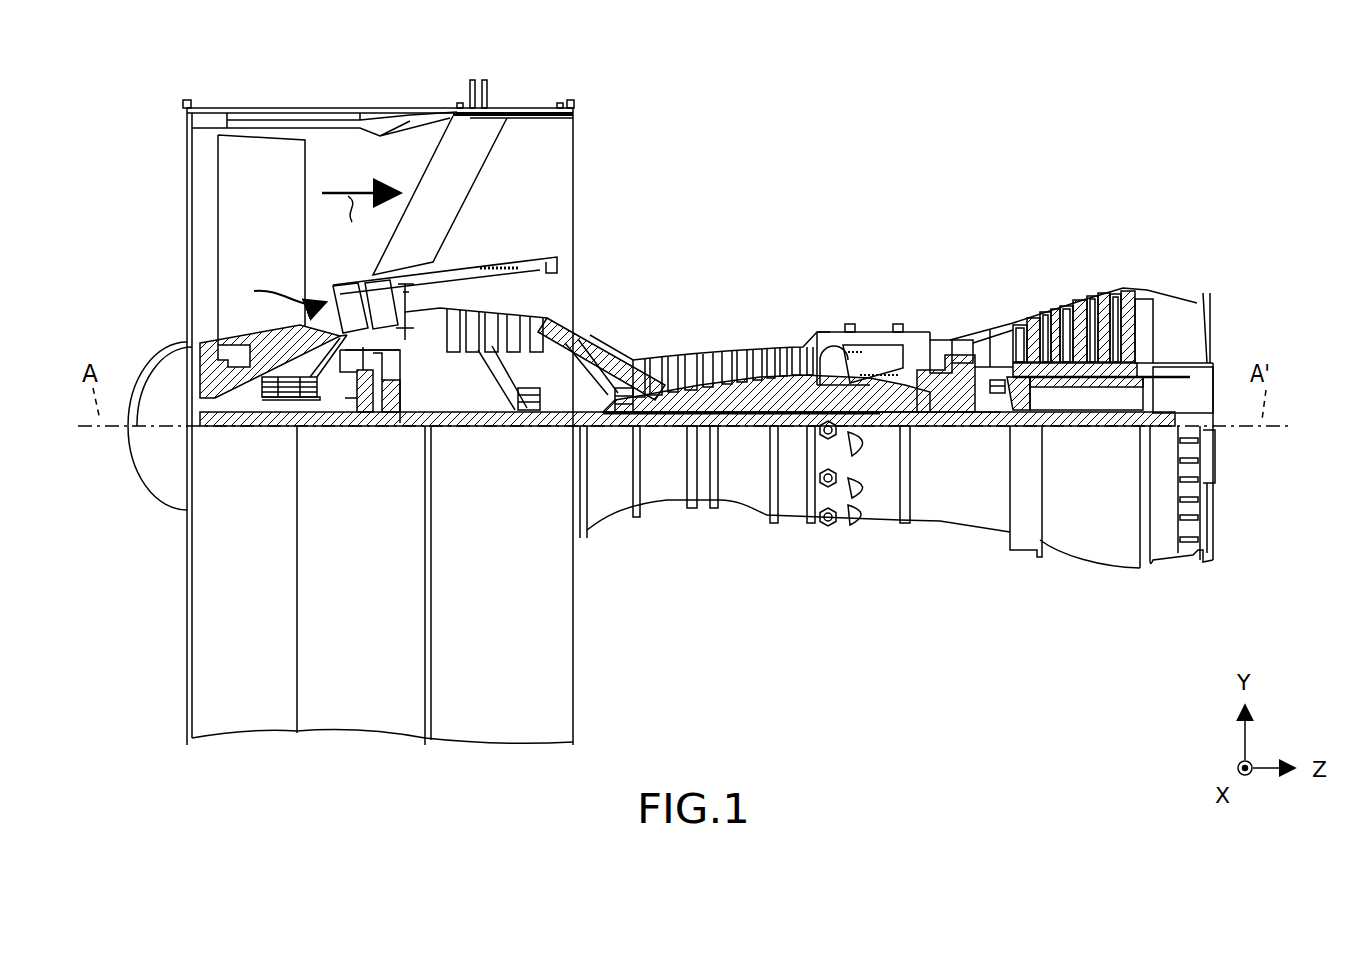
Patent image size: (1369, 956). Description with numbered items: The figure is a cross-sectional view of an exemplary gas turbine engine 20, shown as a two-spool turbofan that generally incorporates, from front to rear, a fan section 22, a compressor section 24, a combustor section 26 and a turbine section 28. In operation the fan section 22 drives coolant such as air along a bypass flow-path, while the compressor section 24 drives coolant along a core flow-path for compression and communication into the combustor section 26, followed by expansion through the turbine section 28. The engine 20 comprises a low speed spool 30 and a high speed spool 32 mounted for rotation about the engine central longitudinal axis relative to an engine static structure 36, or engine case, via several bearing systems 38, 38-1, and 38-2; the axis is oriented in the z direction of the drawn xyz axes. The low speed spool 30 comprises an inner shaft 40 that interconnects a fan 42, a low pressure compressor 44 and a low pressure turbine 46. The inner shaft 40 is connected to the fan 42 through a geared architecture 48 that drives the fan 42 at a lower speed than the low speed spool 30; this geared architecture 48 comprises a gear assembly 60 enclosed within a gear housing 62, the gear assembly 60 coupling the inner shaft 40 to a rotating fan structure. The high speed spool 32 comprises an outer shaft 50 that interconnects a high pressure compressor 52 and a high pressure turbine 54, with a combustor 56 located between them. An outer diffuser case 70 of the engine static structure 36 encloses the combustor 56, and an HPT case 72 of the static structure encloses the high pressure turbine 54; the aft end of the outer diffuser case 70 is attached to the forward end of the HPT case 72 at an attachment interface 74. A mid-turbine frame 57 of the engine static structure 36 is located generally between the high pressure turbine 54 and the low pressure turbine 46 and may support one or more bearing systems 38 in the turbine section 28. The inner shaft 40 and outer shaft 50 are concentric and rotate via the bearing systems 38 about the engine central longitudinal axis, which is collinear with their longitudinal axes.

The gas turbine engine 20 is at (912, 152).
The fan section 22 is at (430, 92).
The compressor section 24 is at (820, 222).
The combustor section 26 is at (925, 222).
The turbine section 28 is at (1145, 222).
The low speed spool 30 is at (752, 440).
The high speed spool 32 is at (787, 385).
The engine static structure 36 is at (796, 505).
The bearing system 38 is at (978, 428).
The bearing system 38-1 is at (270, 402).
The bearing system 38-2 is at (527, 415).
The inner shaft 40 is at (600, 430).
The fan 42 is at (272, 237).
The low pressure compressor 44 is at (505, 322).
The low pressure turbine 46 is at (1082, 305).
The geared architecture 48 is at (393, 442).
The outer shaft 50 is at (875, 425).
The high pressure compressor 52 is at (732, 385).
The high pressure turbine 54 is at (942, 340).
The combustor 56 is at (868, 362).
The mid-turbine frame 57 is at (988, 330).
The gear assembly 60 is at (395, 397).
The gear housing 62 is at (395, 370).
The outer diffuser case 70 is at (883, 508).
The HPT case 72 is at (990, 520).
The attachment interface 74 is at (895, 337).